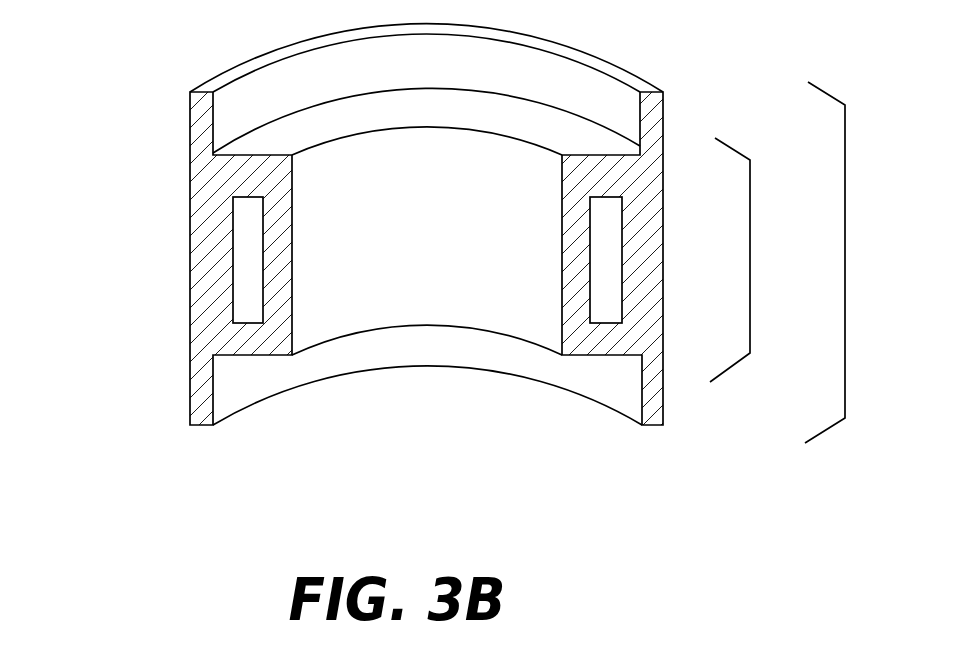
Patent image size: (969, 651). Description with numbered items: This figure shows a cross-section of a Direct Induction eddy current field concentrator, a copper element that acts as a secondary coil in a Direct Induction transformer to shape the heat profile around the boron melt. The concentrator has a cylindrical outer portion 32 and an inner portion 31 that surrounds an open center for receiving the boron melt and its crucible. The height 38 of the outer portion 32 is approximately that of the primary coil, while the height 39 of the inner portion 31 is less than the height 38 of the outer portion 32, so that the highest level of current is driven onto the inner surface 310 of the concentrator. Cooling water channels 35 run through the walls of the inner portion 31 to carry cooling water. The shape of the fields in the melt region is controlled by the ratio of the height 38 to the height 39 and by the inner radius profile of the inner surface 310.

The inner portion 31 is at (215, 237).
The outer portion 32 is at (190, 92).
The cooling water channels 35 is at (245, 297).
The inner surface 310 is at (503, 277).
The height of the outer portion 38 is at (845, 255).
The height of the inner portion 39 is at (750, 262).